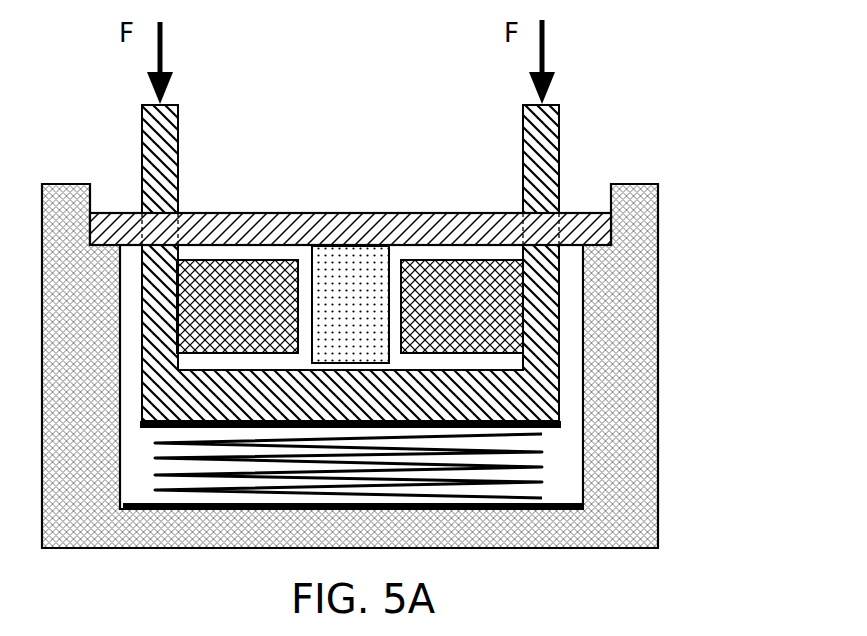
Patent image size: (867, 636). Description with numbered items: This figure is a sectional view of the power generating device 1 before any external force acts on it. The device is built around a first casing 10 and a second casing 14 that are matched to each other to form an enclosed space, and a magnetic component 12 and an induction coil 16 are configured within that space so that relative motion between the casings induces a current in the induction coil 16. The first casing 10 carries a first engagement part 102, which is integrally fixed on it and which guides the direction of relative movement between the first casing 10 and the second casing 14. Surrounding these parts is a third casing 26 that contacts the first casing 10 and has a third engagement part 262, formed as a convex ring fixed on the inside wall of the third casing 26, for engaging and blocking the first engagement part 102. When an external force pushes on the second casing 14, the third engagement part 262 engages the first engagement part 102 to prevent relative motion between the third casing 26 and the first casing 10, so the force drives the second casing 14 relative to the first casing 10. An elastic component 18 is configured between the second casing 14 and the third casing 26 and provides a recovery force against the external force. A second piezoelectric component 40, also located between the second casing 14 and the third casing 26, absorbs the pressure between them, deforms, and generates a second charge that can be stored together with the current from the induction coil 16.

The power generating device 1 is at (57, 125).
The first casing 10 is at (359, 213).
The first engagement part 102 is at (600, 213).
The magnetic component 12 is at (389, 288).
The second casing 14 is at (560, 389).
The induction coil 16 is at (522, 340).
The elastic component 18 is at (432, 495).
The third casing 26 is at (660, 493).
The third engagement part 262 is at (597, 245).
The second piezoelectric component 40 is at (577, 508).